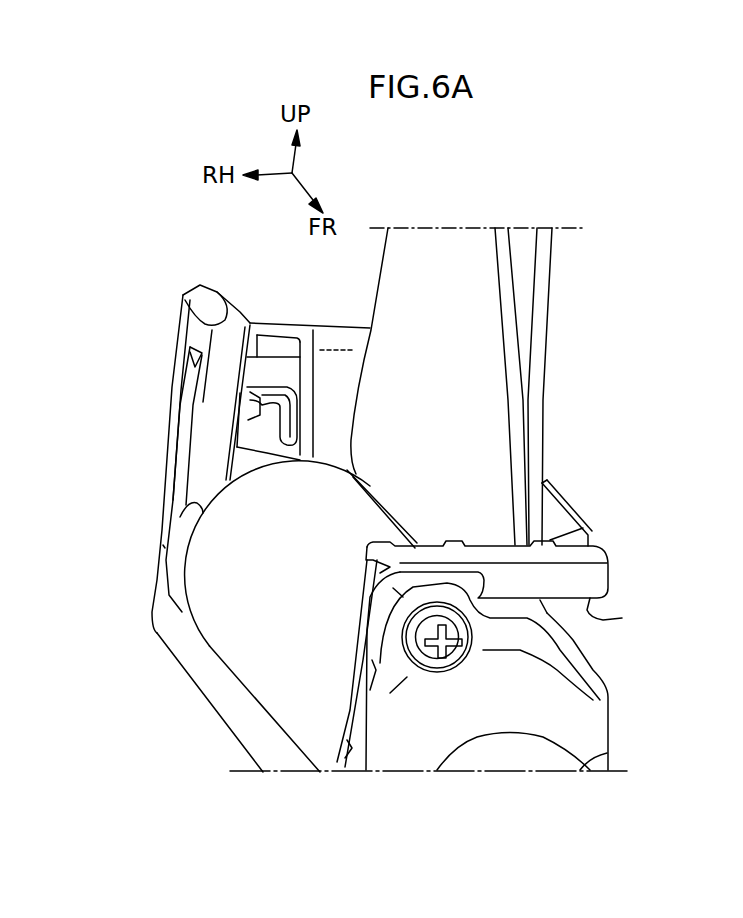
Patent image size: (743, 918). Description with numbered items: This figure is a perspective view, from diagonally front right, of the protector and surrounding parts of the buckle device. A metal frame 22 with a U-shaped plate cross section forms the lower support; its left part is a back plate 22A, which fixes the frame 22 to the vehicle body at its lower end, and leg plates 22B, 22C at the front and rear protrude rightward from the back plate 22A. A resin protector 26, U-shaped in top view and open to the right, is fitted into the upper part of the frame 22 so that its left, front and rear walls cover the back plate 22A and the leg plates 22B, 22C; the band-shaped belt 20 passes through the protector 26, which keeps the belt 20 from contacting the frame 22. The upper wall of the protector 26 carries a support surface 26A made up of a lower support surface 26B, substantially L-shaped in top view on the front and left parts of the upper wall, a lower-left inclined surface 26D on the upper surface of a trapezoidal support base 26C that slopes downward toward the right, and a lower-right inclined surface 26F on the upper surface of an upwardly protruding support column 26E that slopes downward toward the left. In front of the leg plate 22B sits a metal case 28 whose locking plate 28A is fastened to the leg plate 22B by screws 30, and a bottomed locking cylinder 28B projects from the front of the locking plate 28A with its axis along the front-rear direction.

The belt 20 is at (545, 372).
The frame 22 is at (384, 616).
The back plate 22A is at (603, 620).
The leg plate 22B is at (557, 627).
The leg plate 22C is at (163, 545).
The protector 26 is at (338, 328).
The support surface 26A is at (443, 409).
The lower support surface 26B is at (585, 555).
The support base 26C is at (547, 482).
The lower-left inclined surface 26D is at (555, 517).
The support column 26E is at (183, 295).
The lower-right inclined surface 26F is at (228, 307).
The case 28 is at (525, 671).
The locking plate 28A is at (602, 713).
The locking cylinder 28B is at (607, 753).
The screw 30 is at (460, 667).